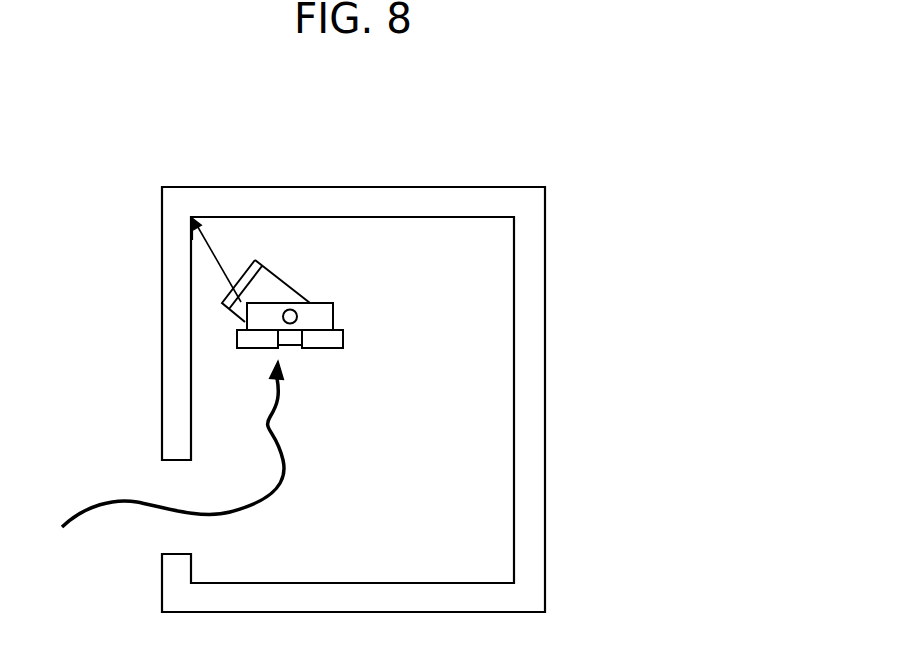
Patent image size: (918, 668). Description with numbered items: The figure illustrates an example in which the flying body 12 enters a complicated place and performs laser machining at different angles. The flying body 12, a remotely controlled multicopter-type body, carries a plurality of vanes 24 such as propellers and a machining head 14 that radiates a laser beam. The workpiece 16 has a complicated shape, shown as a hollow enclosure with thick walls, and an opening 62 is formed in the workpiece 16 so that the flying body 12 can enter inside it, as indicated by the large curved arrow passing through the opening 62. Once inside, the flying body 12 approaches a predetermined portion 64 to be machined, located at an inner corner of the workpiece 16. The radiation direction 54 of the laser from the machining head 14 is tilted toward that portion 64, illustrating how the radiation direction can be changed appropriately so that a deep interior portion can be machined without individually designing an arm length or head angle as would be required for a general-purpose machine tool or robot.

The flying body 12 is at (311, 340).
The machining head 14 is at (277, 287).
The workpiece 16 is at (545, 336).
The vanes 24 is at (334, 319).
The laser radiation direction 54 is at (217, 251).
The opening 62 is at (162, 485).
The predetermined portion 64 is at (203, 209).